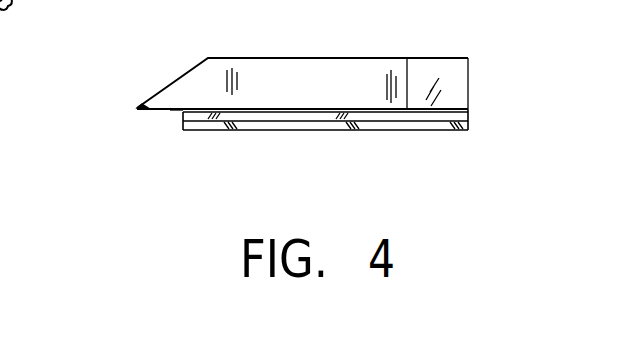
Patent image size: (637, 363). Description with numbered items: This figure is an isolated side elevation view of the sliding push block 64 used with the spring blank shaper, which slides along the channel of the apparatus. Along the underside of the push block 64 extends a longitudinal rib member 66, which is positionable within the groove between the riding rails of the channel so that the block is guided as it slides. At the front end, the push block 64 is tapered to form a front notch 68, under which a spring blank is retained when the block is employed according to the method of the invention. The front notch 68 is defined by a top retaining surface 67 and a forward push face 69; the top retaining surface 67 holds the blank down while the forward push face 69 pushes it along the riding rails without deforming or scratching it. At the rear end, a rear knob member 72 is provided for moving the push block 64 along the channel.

The push block 64 is at (253, 67).
The longitudinal rib member 66 is at (252, 124).
The top retaining surface 67 is at (143, 110).
The front notch 68 is at (114, 142).
The forward push face 69 is at (170, 110).
The rear knob member 72 is at (437, 68).